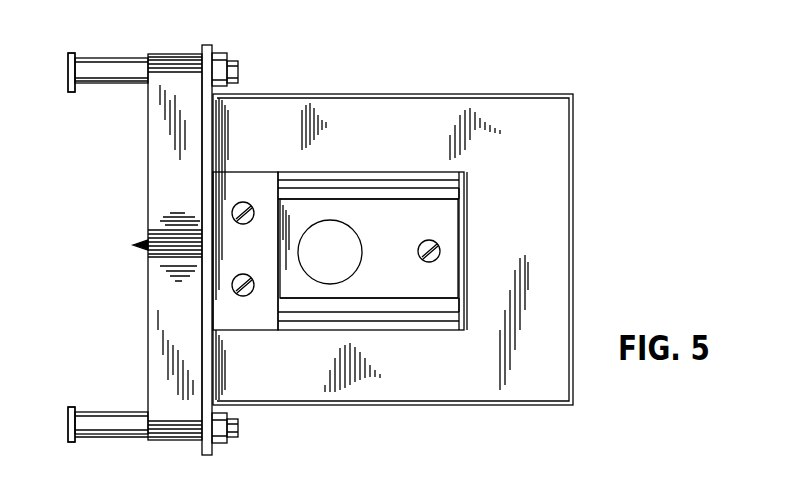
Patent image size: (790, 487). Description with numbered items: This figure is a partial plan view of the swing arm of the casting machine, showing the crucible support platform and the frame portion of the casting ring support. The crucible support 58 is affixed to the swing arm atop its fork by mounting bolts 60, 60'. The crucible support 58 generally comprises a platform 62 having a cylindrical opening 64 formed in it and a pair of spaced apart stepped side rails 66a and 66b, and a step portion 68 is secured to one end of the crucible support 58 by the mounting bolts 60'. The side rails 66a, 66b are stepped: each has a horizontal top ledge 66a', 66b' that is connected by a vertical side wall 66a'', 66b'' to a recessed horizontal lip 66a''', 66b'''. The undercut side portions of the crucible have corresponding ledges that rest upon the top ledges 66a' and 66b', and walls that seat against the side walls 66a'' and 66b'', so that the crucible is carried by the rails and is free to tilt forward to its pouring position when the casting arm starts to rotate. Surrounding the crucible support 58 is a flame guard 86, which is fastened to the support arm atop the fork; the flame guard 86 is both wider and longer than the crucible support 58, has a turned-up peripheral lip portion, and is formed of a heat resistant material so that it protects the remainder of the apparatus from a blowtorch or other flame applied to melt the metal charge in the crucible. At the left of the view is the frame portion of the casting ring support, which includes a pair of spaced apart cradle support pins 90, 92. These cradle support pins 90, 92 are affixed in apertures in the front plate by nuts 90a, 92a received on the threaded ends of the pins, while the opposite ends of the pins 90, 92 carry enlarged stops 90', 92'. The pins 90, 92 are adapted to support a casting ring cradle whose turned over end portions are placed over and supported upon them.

The crucible support 58 is at (396, 264).
The mounting bolt 60 is at (430, 236).
The mounting bolt 60' is at (239, 249).
The platform 62 is at (466, 249).
The cylindrical opening 64 is at (343, 264).
The stepped side rail 66a is at (368, 341).
The horizontal top ledge 66a' is at (368, 346).
The vertical side wall 66a'' is at (369, 290).
The recessed horizontal lip 66a''' is at (487, 293).
The stepped side rail 66b is at (368, 160).
The horizontal top ledge 66b' is at (368, 157).
The vertical side wall 66b'' is at (368, 211).
The recessed horizontal lip 66b''' is at (492, 200).
The step portion 68 is at (261, 180).
The flame guard 86 is at (525, 110).
The cradle support pin 90 is at (108, 440).
The enlarged stop 90' is at (40, 424).
The nut 90a is at (220, 446).
The cradle support pin 92 is at (108, 86).
The enlarged stop 92' is at (47, 78).
The nut 92a is at (243, 46).